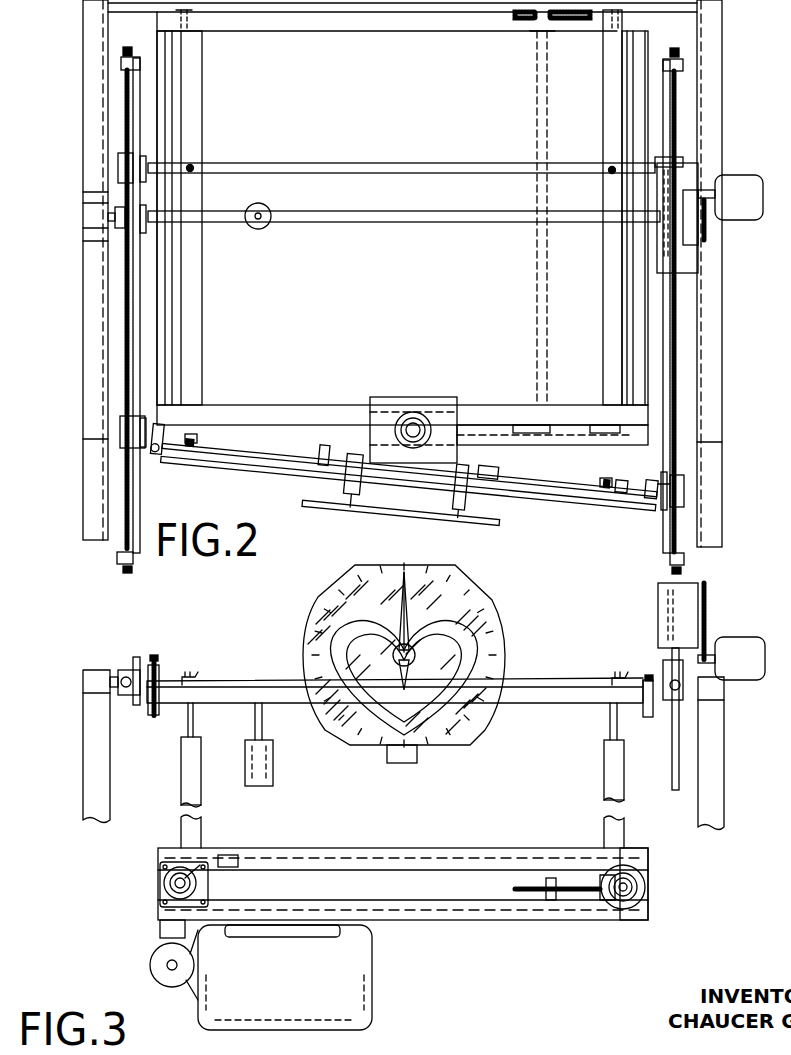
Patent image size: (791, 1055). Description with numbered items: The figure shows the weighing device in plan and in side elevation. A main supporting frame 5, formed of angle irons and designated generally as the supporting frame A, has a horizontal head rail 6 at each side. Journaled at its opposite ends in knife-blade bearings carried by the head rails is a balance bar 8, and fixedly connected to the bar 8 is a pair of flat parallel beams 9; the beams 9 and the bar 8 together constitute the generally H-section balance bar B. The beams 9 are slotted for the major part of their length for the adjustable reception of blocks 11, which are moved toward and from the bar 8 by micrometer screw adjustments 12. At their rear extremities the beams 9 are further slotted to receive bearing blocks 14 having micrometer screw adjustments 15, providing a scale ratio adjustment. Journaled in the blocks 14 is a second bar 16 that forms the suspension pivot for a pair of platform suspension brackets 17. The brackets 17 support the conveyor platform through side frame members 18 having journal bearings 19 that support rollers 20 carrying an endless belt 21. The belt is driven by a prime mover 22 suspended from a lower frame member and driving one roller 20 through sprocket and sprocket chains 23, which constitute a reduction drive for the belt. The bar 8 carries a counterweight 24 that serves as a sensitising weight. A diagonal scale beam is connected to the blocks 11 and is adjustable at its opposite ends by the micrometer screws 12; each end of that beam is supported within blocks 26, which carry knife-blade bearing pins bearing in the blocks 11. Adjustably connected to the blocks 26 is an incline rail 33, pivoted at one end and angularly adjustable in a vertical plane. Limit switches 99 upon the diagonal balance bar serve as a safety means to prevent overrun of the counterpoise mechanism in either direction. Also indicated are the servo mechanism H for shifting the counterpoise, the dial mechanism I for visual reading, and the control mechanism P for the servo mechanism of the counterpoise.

In FIG. 3, the main supporting frame 5 is at (92, 797).
In FIG. 2, the horizontal head rail 6 is at (84, 23).
In FIG. 2, the balance bar 8 is at (335, 224).
In FIG. 2, the flat parallel beams 9 is at (135, 296).
In FIG. 3, the flat parallel beams 9 is at (137, 660).
In FIG. 2, the blocks 11 is at (120, 432).
In FIG. 2, the micrometer screw adjustments 12 is at (122, 570).
In FIG. 2, the bearing blocks 14 is at (118, 168).
In FIG. 2, the micrometer screw adjustments 15 is at (121, 51).
In FIG. 2, the second bar 16 is at (343, 166).
In FIG. 2, the platform suspension brackets 17 is at (196, 119).
In FIG. 3, the platform suspension brackets 17 is at (188, 771).
In FIG. 3, the side frame members 18 is at (553, 848).
In FIG. 3, the journal bearings 19 is at (160, 884).
In FIG. 3, the rollers 20 is at (645, 900).
In FIG. 2, the endless belt 21 is at (416, 326).
In FIG. 3, the endless belt 21 is at (480, 912).
In FIG. 3, the prime mover 22 is at (372, 984).
In FIG. 3, the sprocket and sprocket chains 23 is at (160, 936).
In FIG. 2, the counterweight 24 is at (258, 230).
In FIG. 3, the counterweight 24 is at (273, 774).
In FIG. 3, the blocks 26 is at (153, 718).
In FIG. 2, the incline rail 33 is at (564, 492).
In FIG. 3, the incline rail 33 is at (566, 680).
In FIG. 2, the limit switches 99 is at (186, 444).
In FIG. 3, the limit switches 99 is at (185, 675).
In FIG. 2, the supporting frame A is at (82, 317).
In FIG. 3, the supporting frame A is at (82, 754).
In FIG. 2, the H-section balance bar B is at (128, 270).
In FIG. 2, the servo mechanism H is at (412, 395).
In FIG. 2, the dial mechanism I is at (478, 530).
In FIG. 3, the dial mechanism I is at (475, 568).
In FIG. 2, the control mechanism P is at (695, 268).
In FIG. 3, the control mechanism P is at (655, 596).